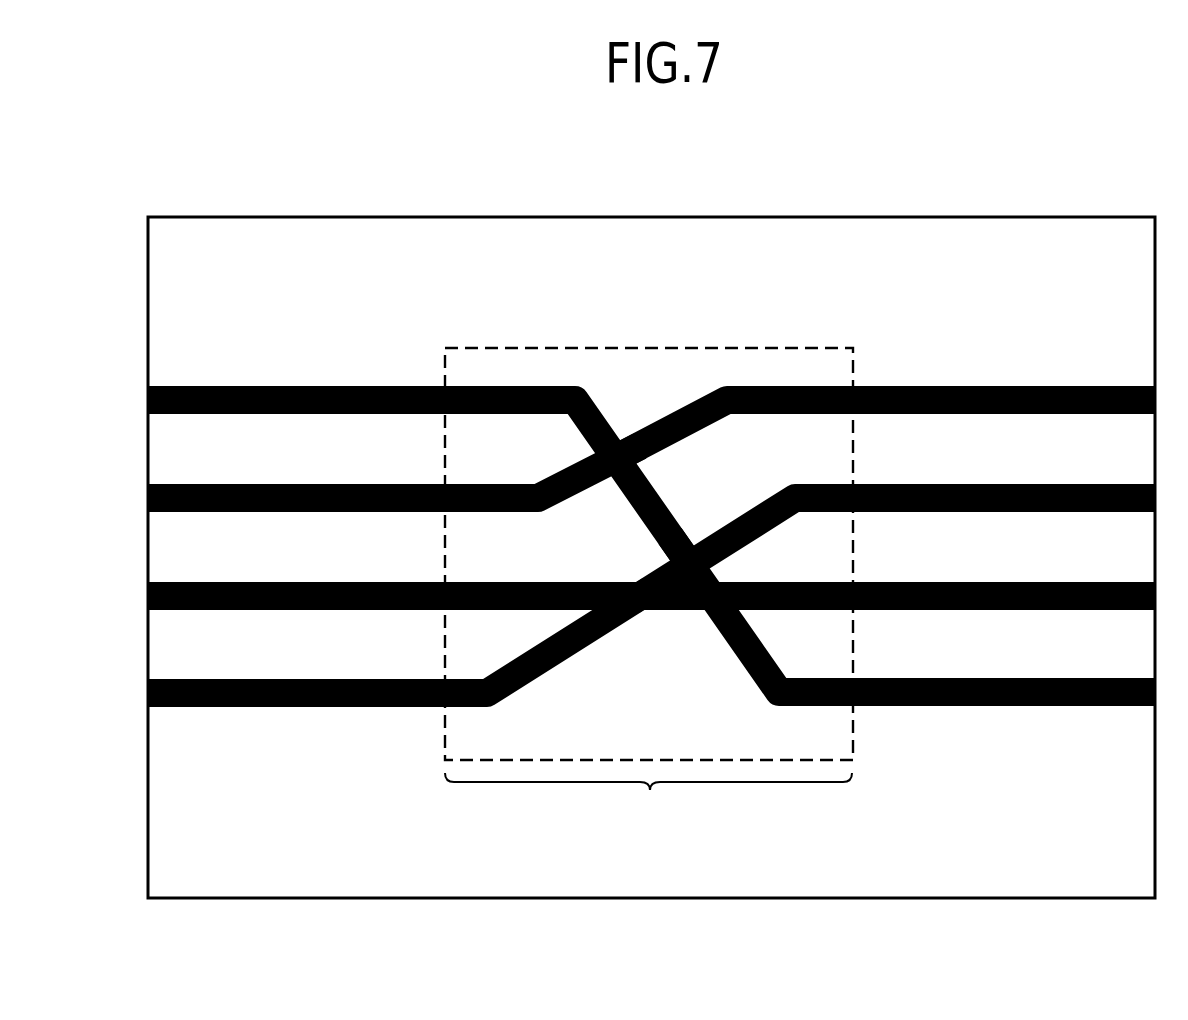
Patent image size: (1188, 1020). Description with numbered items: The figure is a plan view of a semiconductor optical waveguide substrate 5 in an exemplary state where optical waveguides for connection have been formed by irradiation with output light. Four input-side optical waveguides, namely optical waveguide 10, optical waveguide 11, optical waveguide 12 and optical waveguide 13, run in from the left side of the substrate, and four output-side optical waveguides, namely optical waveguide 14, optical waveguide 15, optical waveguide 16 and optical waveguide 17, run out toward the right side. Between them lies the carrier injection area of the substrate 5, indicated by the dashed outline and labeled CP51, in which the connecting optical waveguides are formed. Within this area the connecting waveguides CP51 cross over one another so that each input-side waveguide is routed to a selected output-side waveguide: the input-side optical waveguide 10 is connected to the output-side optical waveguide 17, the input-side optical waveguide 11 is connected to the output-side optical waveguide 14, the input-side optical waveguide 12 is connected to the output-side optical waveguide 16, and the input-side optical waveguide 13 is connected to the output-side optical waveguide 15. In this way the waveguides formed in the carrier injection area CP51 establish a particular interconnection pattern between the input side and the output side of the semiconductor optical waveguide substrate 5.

The semiconductor optical waveguide substrate 5 is at (926, 230).
The optical waveguide 10 is at (295, 386).
The optical waveguide 11 is at (295, 484).
The optical waveguide 12 is at (295, 582).
The optical waveguide 13 is at (295, 679).
The optical waveguide 14 is at (999, 386).
The optical waveguide 15 is at (999, 485).
The optical waveguide 16 is at (999, 583).
The optical waveguide 17 is at (999, 680).
The optical waveguides for connection CP51 is at (650, 792).